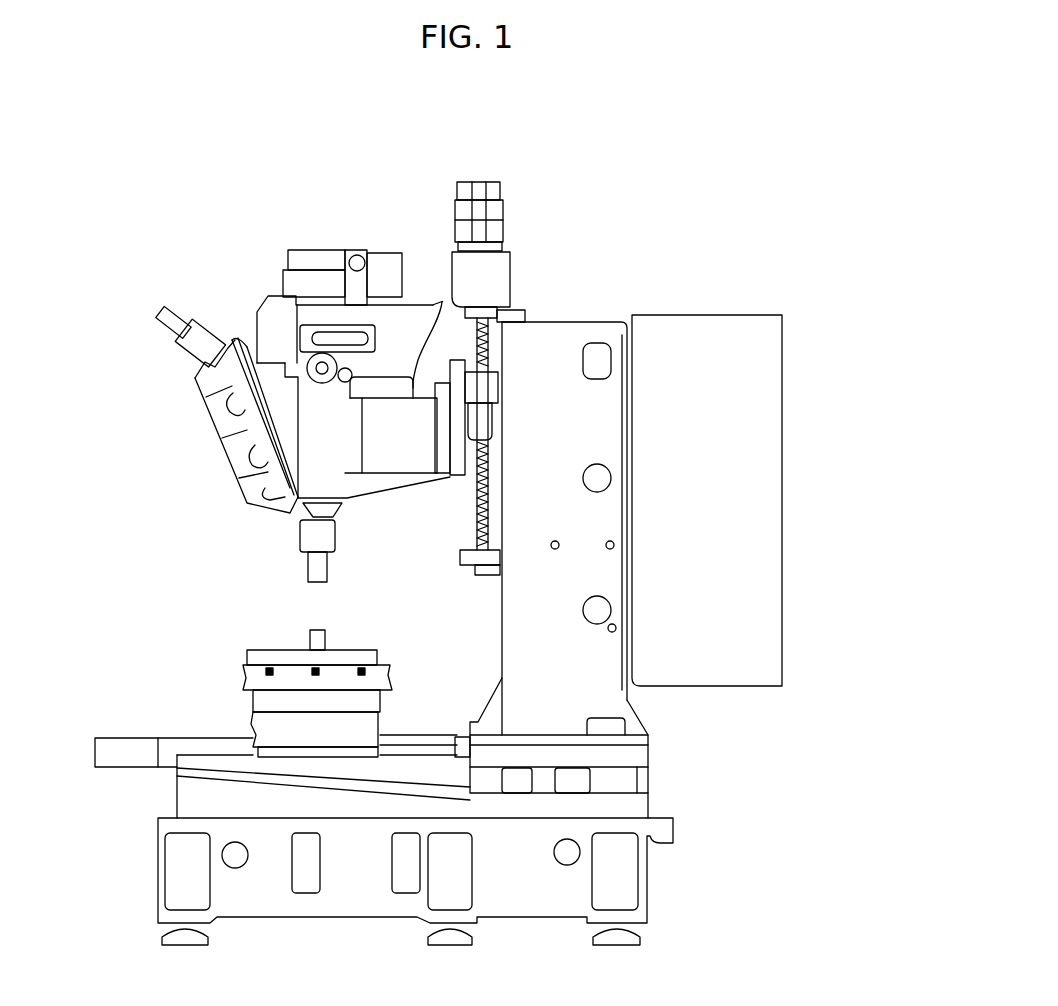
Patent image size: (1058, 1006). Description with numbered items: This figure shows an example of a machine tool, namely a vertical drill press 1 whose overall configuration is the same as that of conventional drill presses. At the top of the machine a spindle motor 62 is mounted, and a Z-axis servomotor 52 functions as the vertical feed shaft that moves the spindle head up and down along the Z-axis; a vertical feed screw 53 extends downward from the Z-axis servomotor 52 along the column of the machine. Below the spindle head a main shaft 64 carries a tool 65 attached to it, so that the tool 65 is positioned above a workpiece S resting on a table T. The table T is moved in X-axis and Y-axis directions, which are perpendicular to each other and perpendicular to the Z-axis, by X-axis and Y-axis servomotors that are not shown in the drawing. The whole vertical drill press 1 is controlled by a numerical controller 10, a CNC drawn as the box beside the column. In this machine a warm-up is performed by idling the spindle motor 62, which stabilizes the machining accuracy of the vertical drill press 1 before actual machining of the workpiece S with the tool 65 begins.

The vertical drill press 1 is at (783, 255).
The numerical controller 10 is at (782, 414).
The Z-axis servomotor 52 is at (495, 217).
The ball screw 53 is at (480, 350).
The spindle motor 62 is at (307, 260).
The main shaft 64 is at (292, 508).
The tool 65 is at (330, 567).
The workpiece S is at (323, 630).
The table T is at (247, 680).